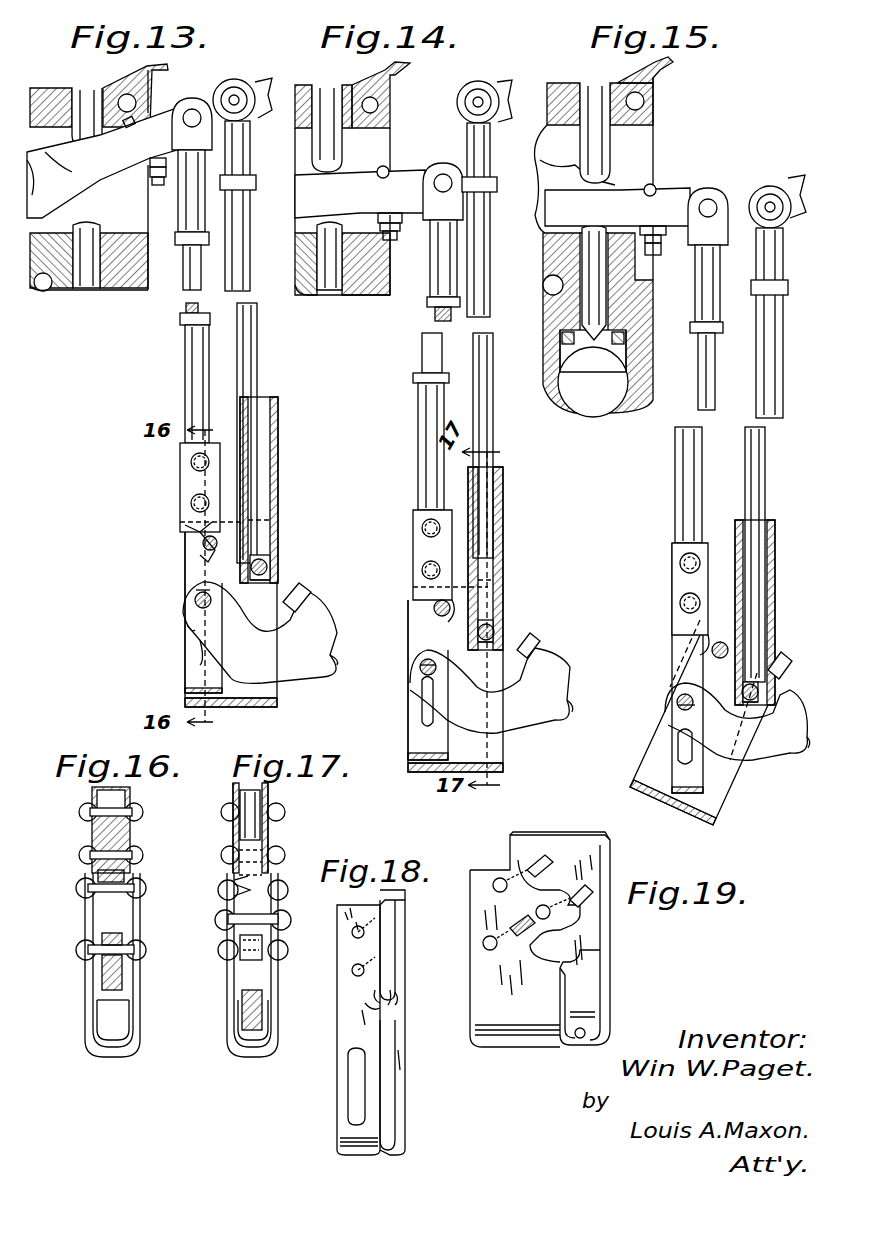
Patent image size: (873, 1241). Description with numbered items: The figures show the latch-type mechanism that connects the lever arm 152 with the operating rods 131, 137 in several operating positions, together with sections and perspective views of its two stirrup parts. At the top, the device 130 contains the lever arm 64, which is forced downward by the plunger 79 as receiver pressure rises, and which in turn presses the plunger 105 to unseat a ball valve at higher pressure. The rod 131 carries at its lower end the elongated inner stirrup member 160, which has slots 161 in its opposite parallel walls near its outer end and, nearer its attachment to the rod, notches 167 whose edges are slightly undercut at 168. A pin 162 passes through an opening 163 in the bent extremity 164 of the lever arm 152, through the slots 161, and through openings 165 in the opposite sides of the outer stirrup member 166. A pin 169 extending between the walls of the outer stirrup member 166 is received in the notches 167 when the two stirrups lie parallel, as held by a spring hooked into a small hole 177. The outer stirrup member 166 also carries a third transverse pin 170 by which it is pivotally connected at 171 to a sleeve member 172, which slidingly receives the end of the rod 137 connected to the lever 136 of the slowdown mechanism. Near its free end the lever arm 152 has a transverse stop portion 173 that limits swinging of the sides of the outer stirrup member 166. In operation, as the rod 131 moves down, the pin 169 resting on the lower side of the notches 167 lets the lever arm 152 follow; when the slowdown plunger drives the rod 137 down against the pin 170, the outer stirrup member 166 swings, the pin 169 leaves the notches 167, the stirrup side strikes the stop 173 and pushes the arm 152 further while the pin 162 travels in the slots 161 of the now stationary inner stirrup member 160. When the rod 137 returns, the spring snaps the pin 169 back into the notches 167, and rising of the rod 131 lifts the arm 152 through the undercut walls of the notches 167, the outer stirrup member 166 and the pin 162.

In FIG. 13, the device 130 is at (40, 94).
In FIG. 14, the device 130 is at (388, 90).
In FIG. 15, the device 130 is at (655, 90).
In FIG. 13, the plunger 79 is at (84, 95).
In FIG. 14, the plunger 79 is at (326, 105).
In FIG. 15, the plunger 79 is at (592, 95).
In FIG. 13, the plunger 105 is at (88, 275).
In FIG. 14, the plunger 105 is at (330, 290).
In FIG. 15, the plunger 105 is at (590, 262).
In FIG. 13, the lever arm 64 is at (146, 128).
In FIG. 14, the lever arm 64 is at (415, 182).
In FIG. 15, the lever arm 64 is at (680, 198).
In FIG. 13, the operating rod 131 is at (187, 290).
In FIG. 14, the operating rod 131 is at (422, 352).
In FIG. 15, the operating rod 131 is at (698, 390).
In FIG. 13, the lever 136 is at (265, 85).
In FIG. 14, the lever 136 is at (502, 85).
In FIG. 15, the lever 136 is at (788, 180).
In FIG. 13, the operating rod 137 is at (258, 350).
In FIG. 14, the operating rod 137 is at (495, 360).
In FIG. 15, the operating rod 137 is at (778, 392).
In FIG. 13, the sleeve or tube member 172 is at (278, 470).
In FIG. 14, the sleeve or tube member 172 is at (504, 518).
In FIG. 15, the sleeve or tube member 172 is at (776, 552).
In FIG. 16, the sleeve or tube member 172 is at (111, 830).
In FIG. 17, the sleeve or tube member 172 is at (268, 834).
In FIG. 13, the third transverse pin 170 is at (262, 565).
In FIG. 14, the third transverse pin 170 is at (490, 628).
In FIG. 15, the third transverse pin 170 is at (755, 686).
In FIG. 17, the third transverse pin 170 is at (276, 918).
In FIG. 19, the third transverse pin 170 is at (583, 905).
In FIG. 13, the pivotal connection 171 is at (268, 572).
In FIG. 14, the pivotal connection 171 is at (496, 636).
In FIG. 15, the pivotal connection 171 is at (752, 705).
In FIG. 13, the outer stirrup-like member 166 is at (277, 692).
In FIG. 14, the outer stirrup-like member 166 is at (425, 772).
In FIG. 15, the outer stirrup-like member 166 is at (652, 735).
In FIG. 16, the outer stirrup-like member 166 is at (85, 995).
In FIG. 17, the outer stirrup-like member 166 is at (228, 1005).
In FIG. 19, the outer stirrup-like member 166 is at (520, 1030).
In FIG. 13, the small hole 177 is at (266, 706).
In FIG. 14, the small hole 177 is at (500, 762).
In FIG. 15, the small hole 177 is at (710, 824).
In FIG. 19, the small hole 177 is at (583, 1036).
In FIG. 13, the inner stirrup-like member 160 is at (186, 690).
In FIG. 14, the inner stirrup-like member 160 is at (410, 758).
In FIG. 15, the inner stirrup-like member 160 is at (680, 795).
In FIG. 16, the inner stirrup-like member 160 is at (100, 1040).
In FIG. 17, the inner stirrup-like member 160 is at (255, 1042).
In FIG. 18, the inner stirrup-like member 160 is at (350, 1038).
In FIG. 13, the notches 167 is at (200, 528).
In FIG. 14, the notches 167 is at (430, 598).
In FIG. 15, the notches 167 is at (698, 632).
In FIG. 16, the notches 167 is at (130, 862).
In FIG. 17, the notches 167 is at (230, 890).
In FIG. 18, the notches 167 is at (378, 990).
In FIG. 13, the pin 169 is at (205, 545).
In FIG. 14, the pin 169 is at (434, 607).
In FIG. 15, the pin 169 is at (721, 642).
In FIG. 16, the pin 169 is at (120, 886).
In FIG. 17, the pin 169 is at (236, 882).
In FIG. 19, the pin 169 is at (533, 862).
In FIG. 13, the undercut 168 is at (216, 552).
In FIG. 14, the undercut 168 is at (446, 616).
In FIG. 15, the undercut 168 is at (700, 652).
In FIG. 18, the undercut 168 is at (372, 1008).
In FIG. 13, the opening 163 is at (198, 592).
In FIG. 14, the opening 163 is at (420, 667).
In FIG. 15, the opening 163 is at (680, 707).
In FIG. 13, the pin 162 is at (196, 601).
In FIG. 14, the pin 162 is at (424, 675).
In FIG. 15, the pin 162 is at (678, 700).
In FIG. 16, the pin 162 is at (105, 952).
In FIG. 17, the pin 162 is at (270, 950).
In FIG. 19, the pin 162 is at (512, 925).
In FIG. 13, the bent extremity 164 is at (225, 640).
In FIG. 14, the bent extremity 164 is at (455, 700).
In FIG. 15, the bent extremity 164 is at (742, 752).
In FIG. 16, the bent extremity 164 is at (122, 966).
In FIG. 17, the bent extremity 164 is at (250, 1012).
In FIG. 13, the transverse stop portion 173 is at (305, 600).
In FIG. 14, the transverse stop portion 173 is at (532, 648).
In FIG. 15, the transverse stop portion 173 is at (785, 663).
In FIG. 13, the lever arm 152 is at (328, 640).
In FIG. 14, the lever arm 152 is at (566, 672).
In FIG. 15, the lever arm 152 is at (800, 748).
In FIG. 13, the slots 161 is at (198, 655).
In FIG. 14, the slots 161 is at (422, 700).
In FIG. 15, the slots 161 is at (680, 745).
In FIG. 16, the slots 161 is at (125, 1003).
In FIG. 18, the slots 161 is at (362, 1090).
In FIG. 16, the openings 165 is at (86, 950).